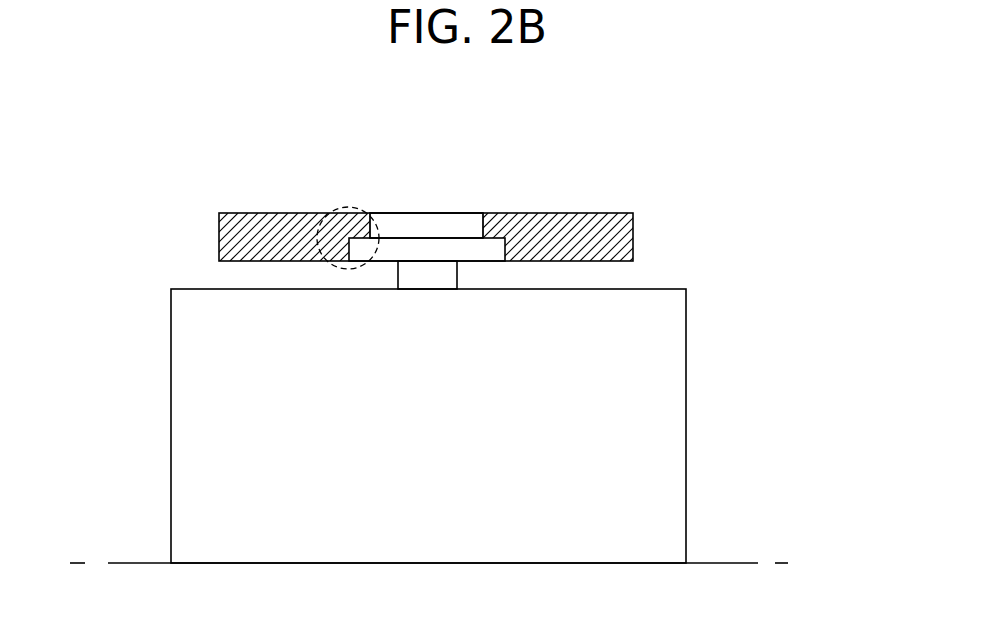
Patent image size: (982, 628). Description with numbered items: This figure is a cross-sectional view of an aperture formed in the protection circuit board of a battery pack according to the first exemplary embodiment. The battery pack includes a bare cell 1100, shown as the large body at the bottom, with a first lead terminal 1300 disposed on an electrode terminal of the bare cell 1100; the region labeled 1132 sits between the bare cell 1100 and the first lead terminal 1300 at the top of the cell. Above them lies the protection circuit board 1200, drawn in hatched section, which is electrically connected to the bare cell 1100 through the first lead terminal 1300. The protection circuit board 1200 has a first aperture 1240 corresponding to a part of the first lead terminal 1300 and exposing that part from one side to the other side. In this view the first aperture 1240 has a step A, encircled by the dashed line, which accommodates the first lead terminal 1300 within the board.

The bare cell 1100 is at (690, 423).
The support protrusion 1132 is at (433, 280).
The protection circuit board 1200 is at (645, 212).
The first aperture 1240 is at (388, 217).
The first lead terminal 1300 is at (503, 263).
The step A is at (333, 265).